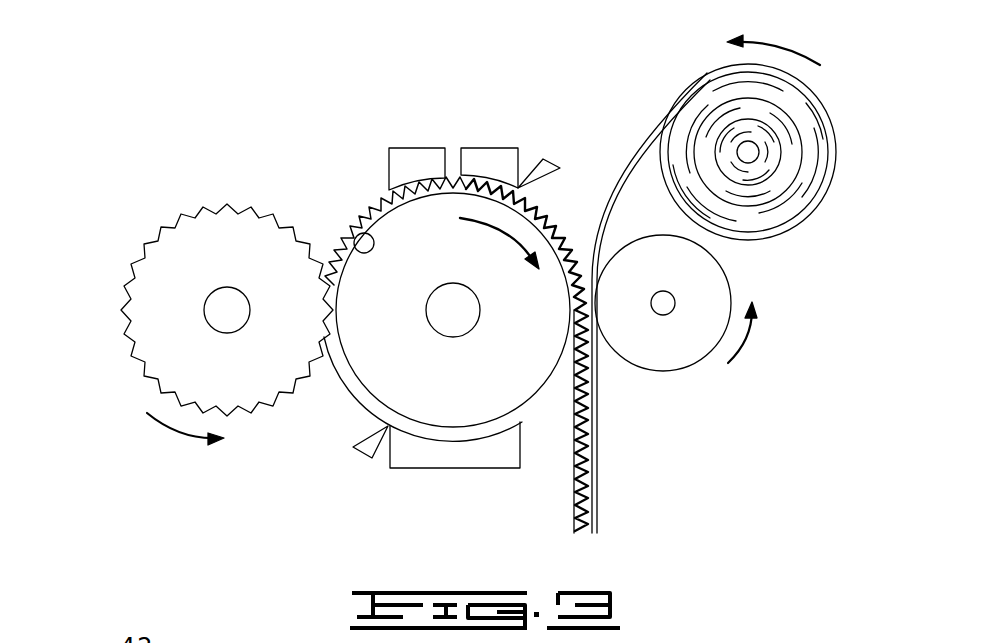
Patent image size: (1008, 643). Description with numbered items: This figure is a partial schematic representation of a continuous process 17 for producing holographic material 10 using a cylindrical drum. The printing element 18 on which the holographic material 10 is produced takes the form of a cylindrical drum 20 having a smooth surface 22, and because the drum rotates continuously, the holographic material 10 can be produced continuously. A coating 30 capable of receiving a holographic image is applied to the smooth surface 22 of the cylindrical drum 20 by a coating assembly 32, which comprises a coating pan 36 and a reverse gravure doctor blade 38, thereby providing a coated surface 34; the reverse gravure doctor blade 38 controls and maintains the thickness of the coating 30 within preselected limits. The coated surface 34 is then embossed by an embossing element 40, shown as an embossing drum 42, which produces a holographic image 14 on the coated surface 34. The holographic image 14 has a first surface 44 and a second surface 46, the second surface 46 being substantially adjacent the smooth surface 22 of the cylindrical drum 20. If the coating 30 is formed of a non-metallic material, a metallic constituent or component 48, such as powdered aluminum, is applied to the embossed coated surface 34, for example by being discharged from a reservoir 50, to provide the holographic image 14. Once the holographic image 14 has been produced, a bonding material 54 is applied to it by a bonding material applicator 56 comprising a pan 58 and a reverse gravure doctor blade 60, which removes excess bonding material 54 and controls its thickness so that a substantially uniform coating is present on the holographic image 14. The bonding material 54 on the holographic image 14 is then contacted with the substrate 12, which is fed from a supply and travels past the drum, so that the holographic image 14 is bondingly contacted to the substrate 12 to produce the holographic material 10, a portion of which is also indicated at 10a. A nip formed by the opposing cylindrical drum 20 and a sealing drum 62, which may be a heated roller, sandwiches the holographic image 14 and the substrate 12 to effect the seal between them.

The holographic material 10 is at (597, 547).
The web portion 10a is at (783, 642).
The substrate 12 is at (640, 128).
The holographic image 14 is at (345, 206).
The continuous process 17 is at (267, 72).
The printing element 18 is at (386, 368).
The cylindrical drum 20 is at (512, 417).
The smooth surface 22 is at (528, 373).
The coating 30 is at (519, 418).
The coating assembly 32 is at (378, 470).
The coated surface 34 is at (367, 412).
The coating pan 36 is at (443, 470).
The reverse gravure doctor blade 38 is at (367, 452).
The embossing element 40 is at (146, 240).
The embossing drum 42 is at (118, 316).
The first surface 44 is at (369, 210).
The second surface 46 is at (353, 244).
The metallic constituent or component 48 is at (402, 146).
The reservoir 50 is at (430, 178).
The bonding material 54 is at (549, 212).
The bonding material applicator 56 is at (531, 150).
The pan 58 is at (494, 146).
The reverse gravure doctor blade 60 is at (553, 160).
The sealing drum 62 is at (672, 371).